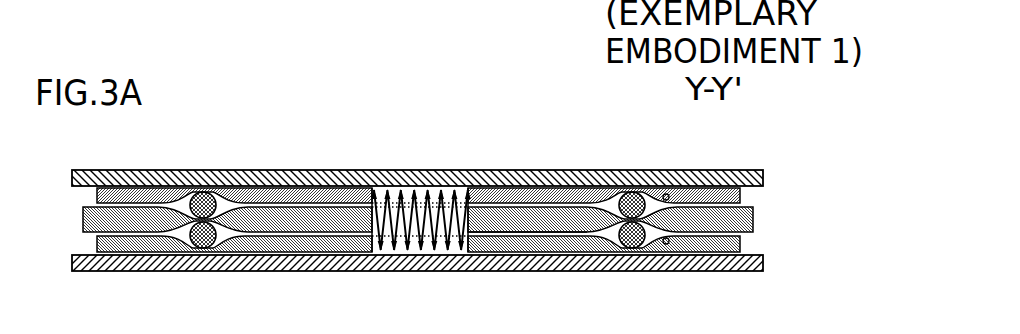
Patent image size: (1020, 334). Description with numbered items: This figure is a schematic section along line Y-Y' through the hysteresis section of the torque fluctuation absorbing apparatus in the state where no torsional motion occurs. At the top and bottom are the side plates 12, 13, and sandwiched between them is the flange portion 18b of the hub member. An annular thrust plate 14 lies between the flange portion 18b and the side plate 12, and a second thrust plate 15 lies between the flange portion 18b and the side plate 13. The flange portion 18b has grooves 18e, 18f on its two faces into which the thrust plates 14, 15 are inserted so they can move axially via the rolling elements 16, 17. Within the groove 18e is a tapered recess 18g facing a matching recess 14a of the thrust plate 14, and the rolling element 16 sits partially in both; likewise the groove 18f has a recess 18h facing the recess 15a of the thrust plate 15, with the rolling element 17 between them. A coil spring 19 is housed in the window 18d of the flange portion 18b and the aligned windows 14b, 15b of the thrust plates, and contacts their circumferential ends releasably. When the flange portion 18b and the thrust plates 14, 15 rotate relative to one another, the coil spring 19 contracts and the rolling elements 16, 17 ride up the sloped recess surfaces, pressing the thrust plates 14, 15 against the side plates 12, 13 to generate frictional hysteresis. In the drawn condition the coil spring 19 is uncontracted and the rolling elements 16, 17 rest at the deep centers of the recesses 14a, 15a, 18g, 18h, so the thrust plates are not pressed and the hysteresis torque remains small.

The side plate 12 is at (269, 170).
The side plate 13 is at (266, 271).
The thrust plate 14 is at (345, 196).
The recess 14a is at (668, 196).
The window 14b is at (396, 188).
The thrust plate 15 is at (345, 252).
The recess 15a is at (672, 252).
The window 15b is at (390, 271).
The rolling element 16 is at (629, 192).
The rolling element 17 is at (630, 249).
The flange portion 18b is at (503, 196).
The window 18d is at (440, 188).
The groove 18e is at (550, 206).
The groove 18f is at (539, 233).
The recess 18g is at (596, 204).
The recess 18h is at (586, 250).
The coil spring 19 is at (438, 252).